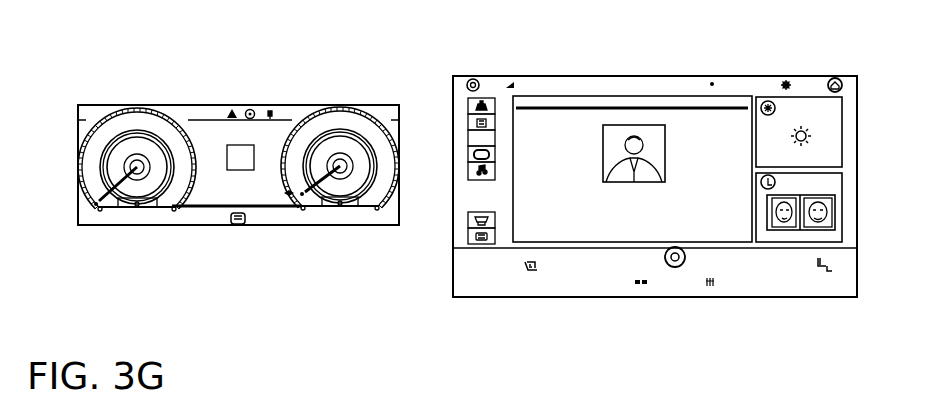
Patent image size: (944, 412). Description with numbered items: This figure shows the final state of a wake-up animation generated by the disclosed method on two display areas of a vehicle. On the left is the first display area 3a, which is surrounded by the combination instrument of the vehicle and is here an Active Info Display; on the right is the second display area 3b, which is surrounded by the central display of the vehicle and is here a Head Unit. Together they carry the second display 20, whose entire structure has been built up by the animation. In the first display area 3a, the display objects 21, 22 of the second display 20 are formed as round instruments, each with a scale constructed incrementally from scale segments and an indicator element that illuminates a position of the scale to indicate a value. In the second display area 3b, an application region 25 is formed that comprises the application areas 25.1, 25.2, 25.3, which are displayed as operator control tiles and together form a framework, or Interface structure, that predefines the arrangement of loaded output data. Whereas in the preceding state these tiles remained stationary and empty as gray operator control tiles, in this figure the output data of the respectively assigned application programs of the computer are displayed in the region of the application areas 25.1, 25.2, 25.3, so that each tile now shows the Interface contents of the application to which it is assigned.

The second display 20 is at (446, 237).
The first display area 3a is at (177, 105).
The second display area 3b is at (774, 75).
The display object 21 is at (111, 106).
The display object 22 is at (368, 106).
The application region 25 is at (253, 200).
The application area 25.1 is at (595, 118).
The application area 25.2 is at (822, 110).
The application area 25.3 is at (799, 229).